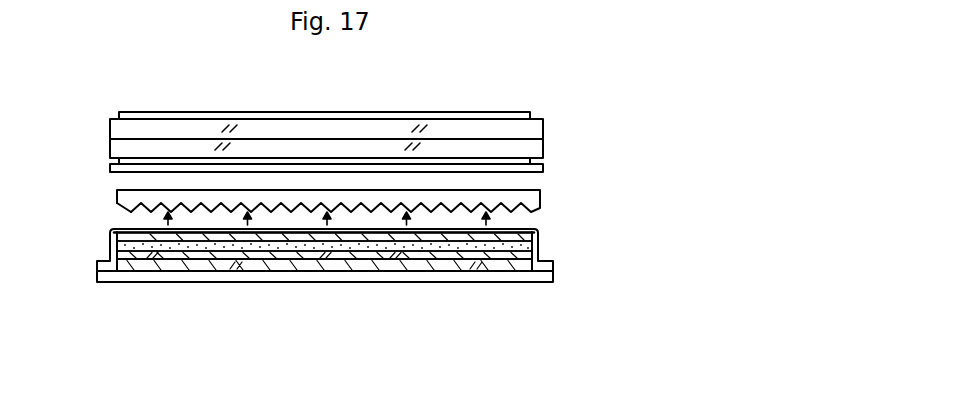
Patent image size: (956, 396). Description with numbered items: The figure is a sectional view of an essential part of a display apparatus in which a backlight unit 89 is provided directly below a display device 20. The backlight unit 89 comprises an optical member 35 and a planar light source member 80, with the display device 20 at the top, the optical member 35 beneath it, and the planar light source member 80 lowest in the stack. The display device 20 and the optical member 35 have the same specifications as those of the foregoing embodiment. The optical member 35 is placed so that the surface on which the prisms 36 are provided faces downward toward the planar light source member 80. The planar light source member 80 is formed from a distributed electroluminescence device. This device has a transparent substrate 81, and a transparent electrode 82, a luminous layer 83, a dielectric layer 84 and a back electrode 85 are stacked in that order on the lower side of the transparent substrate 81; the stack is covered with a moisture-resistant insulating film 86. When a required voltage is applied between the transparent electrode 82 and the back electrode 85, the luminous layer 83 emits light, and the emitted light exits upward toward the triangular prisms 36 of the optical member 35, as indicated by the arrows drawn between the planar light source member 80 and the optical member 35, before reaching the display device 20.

The display device 20 is at (518, 113).
The optical member 35 is at (317, 207).
The prisms 36 is at (129, 213).
The planar light source member 80 is at (351, 285).
The transparent substrate 81 is at (146, 233).
The transparent electrode 82 is at (197, 243).
The luminous layer 83 is at (238, 253).
The dielectric layer 84 is at (287, 259).
The back electrode 85 is at (335, 263).
The moisture-resistant insulating film 86 is at (383, 274).
The backlight unit 89 is at (610, 203).